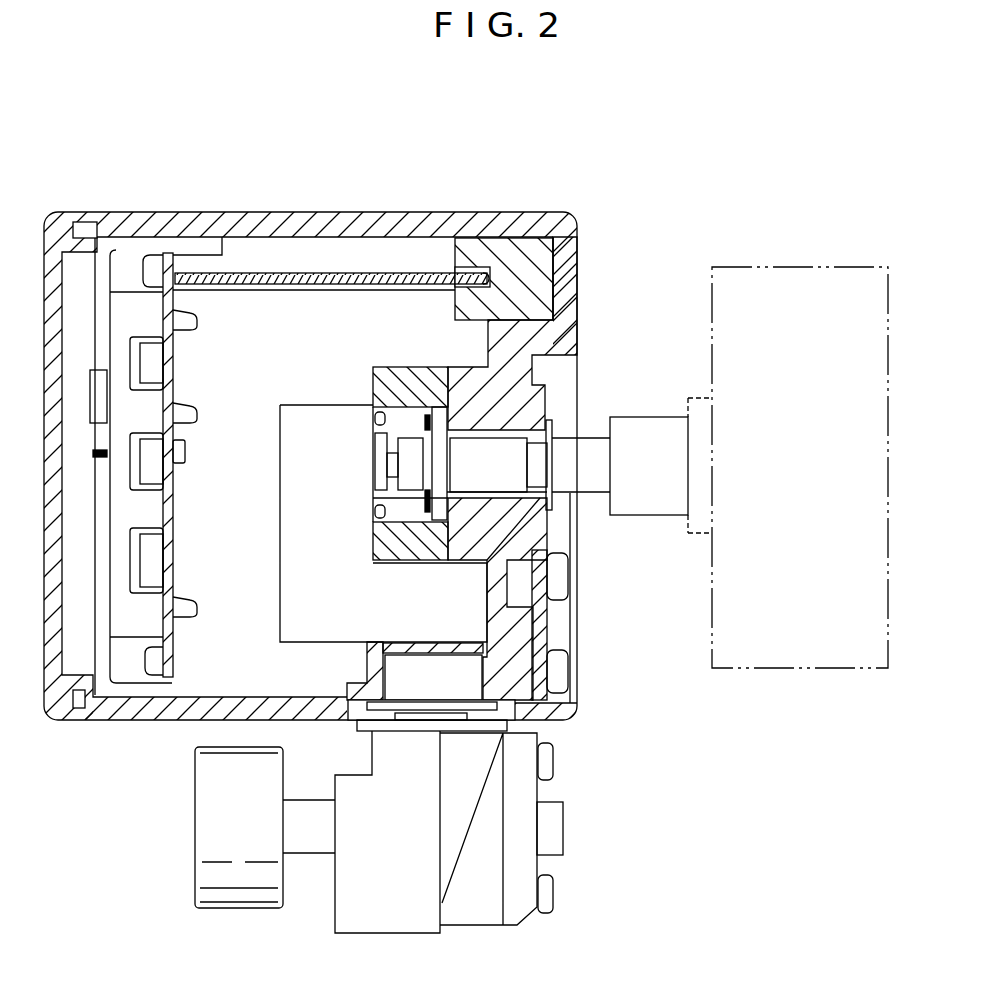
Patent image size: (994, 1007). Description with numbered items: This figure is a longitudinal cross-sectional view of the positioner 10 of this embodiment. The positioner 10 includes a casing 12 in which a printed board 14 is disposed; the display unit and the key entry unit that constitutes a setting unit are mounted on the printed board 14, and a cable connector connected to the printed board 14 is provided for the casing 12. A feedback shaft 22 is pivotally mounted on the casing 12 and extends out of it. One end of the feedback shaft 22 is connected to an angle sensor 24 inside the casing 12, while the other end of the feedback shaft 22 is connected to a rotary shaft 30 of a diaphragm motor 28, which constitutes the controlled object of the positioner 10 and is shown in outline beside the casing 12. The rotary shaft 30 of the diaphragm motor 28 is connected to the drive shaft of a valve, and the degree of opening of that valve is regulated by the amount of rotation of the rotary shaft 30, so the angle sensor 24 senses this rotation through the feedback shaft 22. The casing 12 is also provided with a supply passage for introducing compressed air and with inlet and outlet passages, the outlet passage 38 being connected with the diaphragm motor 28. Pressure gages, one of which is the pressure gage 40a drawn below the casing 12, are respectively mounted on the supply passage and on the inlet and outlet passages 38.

The positioner 10 is at (587, 123).
The casing 12 is at (352, 212).
The printed board 14 is at (170, 503).
The feedback shaft 22 is at (590, 483).
The angle sensor 24 is at (320, 520).
The diaphragm motor 28 is at (801, 260).
The rotary shaft 30 is at (688, 405).
The outlet passage 38 is at (398, 920).
The pressure gage 40a is at (232, 882).